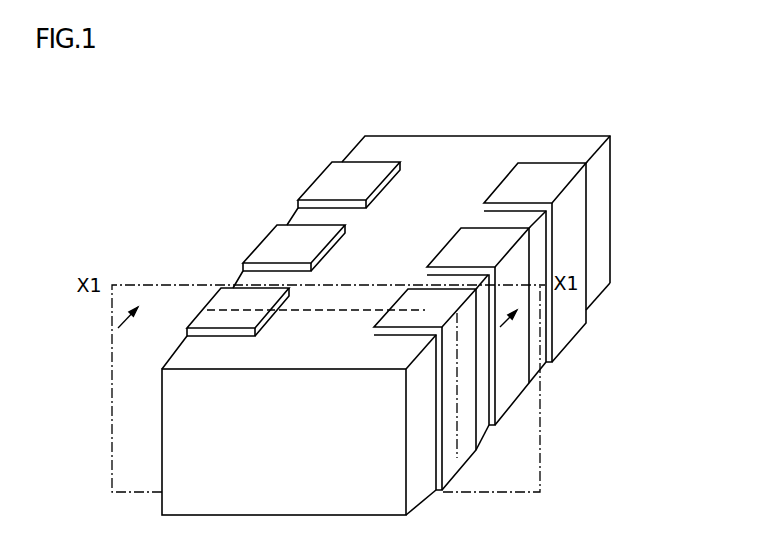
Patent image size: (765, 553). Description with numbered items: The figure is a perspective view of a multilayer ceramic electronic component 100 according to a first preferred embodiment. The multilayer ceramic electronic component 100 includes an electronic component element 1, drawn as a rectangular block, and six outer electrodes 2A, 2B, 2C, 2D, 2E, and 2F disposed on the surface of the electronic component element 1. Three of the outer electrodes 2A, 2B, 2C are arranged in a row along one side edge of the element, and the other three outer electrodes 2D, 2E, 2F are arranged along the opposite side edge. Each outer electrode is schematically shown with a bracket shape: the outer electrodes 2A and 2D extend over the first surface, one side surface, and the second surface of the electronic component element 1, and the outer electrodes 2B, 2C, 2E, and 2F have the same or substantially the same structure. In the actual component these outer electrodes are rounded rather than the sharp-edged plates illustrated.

The multilayer ceramic electronic component 100 is at (720, 75).
The electronic component element 1 is at (440, 182).
The outer electrode 2A is at (245, 305).
The outer electrode 2B is at (293, 245).
The outer electrode 2C is at (347, 182).
The outer electrode 2D is at (420, 303).
The outer electrode 2E is at (478, 244).
The outer electrode 2F is at (533, 182).